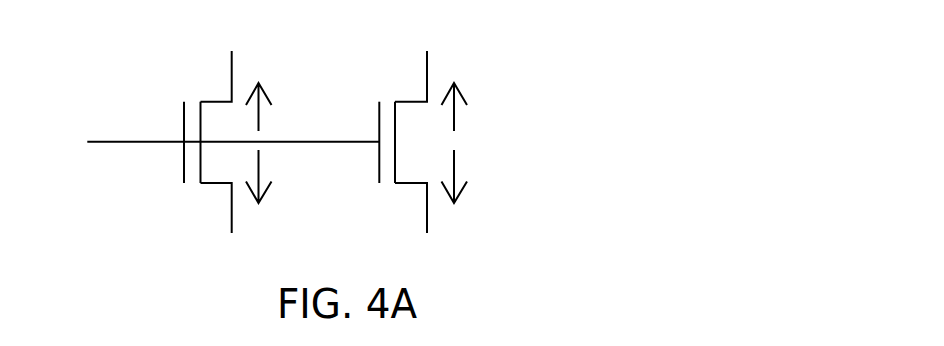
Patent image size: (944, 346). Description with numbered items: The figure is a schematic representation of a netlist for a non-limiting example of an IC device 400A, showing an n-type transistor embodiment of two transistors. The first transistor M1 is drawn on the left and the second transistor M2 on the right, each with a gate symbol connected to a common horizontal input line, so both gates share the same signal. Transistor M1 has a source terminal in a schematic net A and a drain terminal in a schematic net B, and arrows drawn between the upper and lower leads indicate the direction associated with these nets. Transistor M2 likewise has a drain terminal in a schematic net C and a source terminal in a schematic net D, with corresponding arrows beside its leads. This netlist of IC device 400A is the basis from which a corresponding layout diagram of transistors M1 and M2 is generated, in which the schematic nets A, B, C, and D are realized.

The IC device 400A is at (672, 72).
The transistor M1 is at (179, 142).
The transistor M2 is at (375, 142).
The schematic net A is at (259, 194).
The schematic net B is at (259, 91).
The schematic net C is at (455, 91).
The schematic net D is at (455, 194).